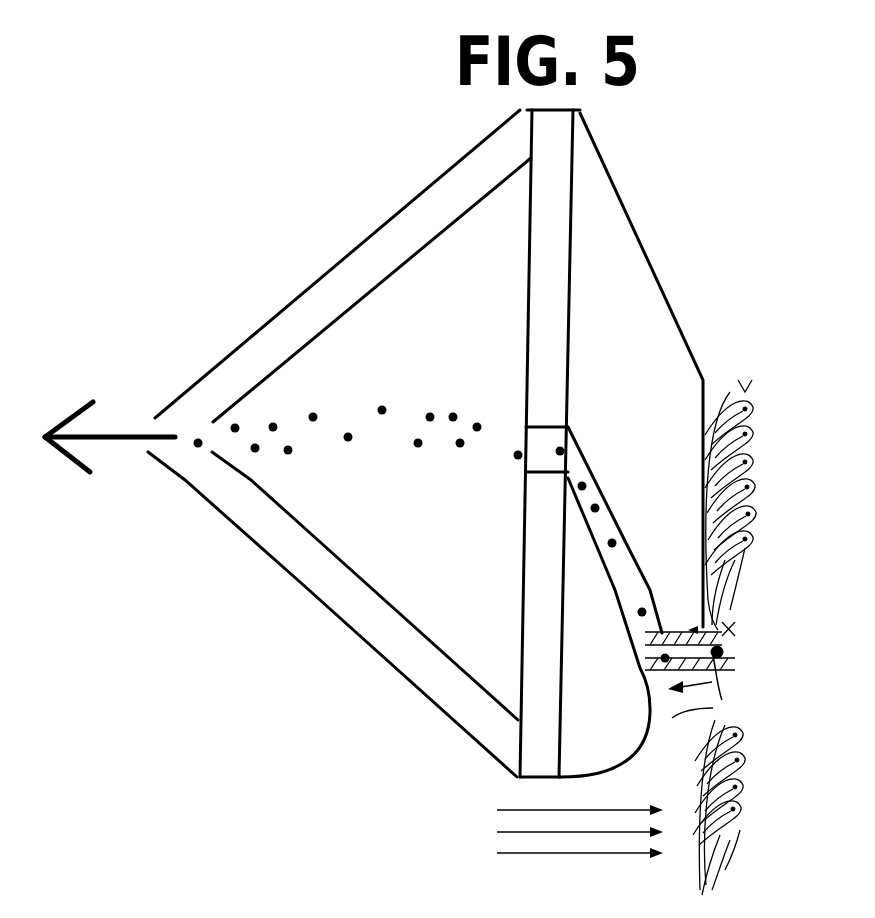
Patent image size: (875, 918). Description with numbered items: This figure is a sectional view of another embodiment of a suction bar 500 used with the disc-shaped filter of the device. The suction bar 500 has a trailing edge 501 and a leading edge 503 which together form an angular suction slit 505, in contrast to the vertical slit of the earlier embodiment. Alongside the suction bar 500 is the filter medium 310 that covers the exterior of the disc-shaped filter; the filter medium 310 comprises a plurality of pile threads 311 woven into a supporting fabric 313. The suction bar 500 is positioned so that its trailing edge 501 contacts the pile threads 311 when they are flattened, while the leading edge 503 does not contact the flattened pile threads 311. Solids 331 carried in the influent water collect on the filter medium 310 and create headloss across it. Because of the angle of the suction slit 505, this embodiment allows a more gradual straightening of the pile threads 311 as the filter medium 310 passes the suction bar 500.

The suction bar 500 is at (600, 130).
The solids 331 is at (304, 451).
The filter medium 310 is at (772, 415).
The trailing edge 501 is at (798, 625).
The pile threads 311 is at (798, 665).
The angular suction slit 505 is at (770, 687).
The leading edge 503 is at (666, 705).
The supporting fabric 313 is at (838, 833).